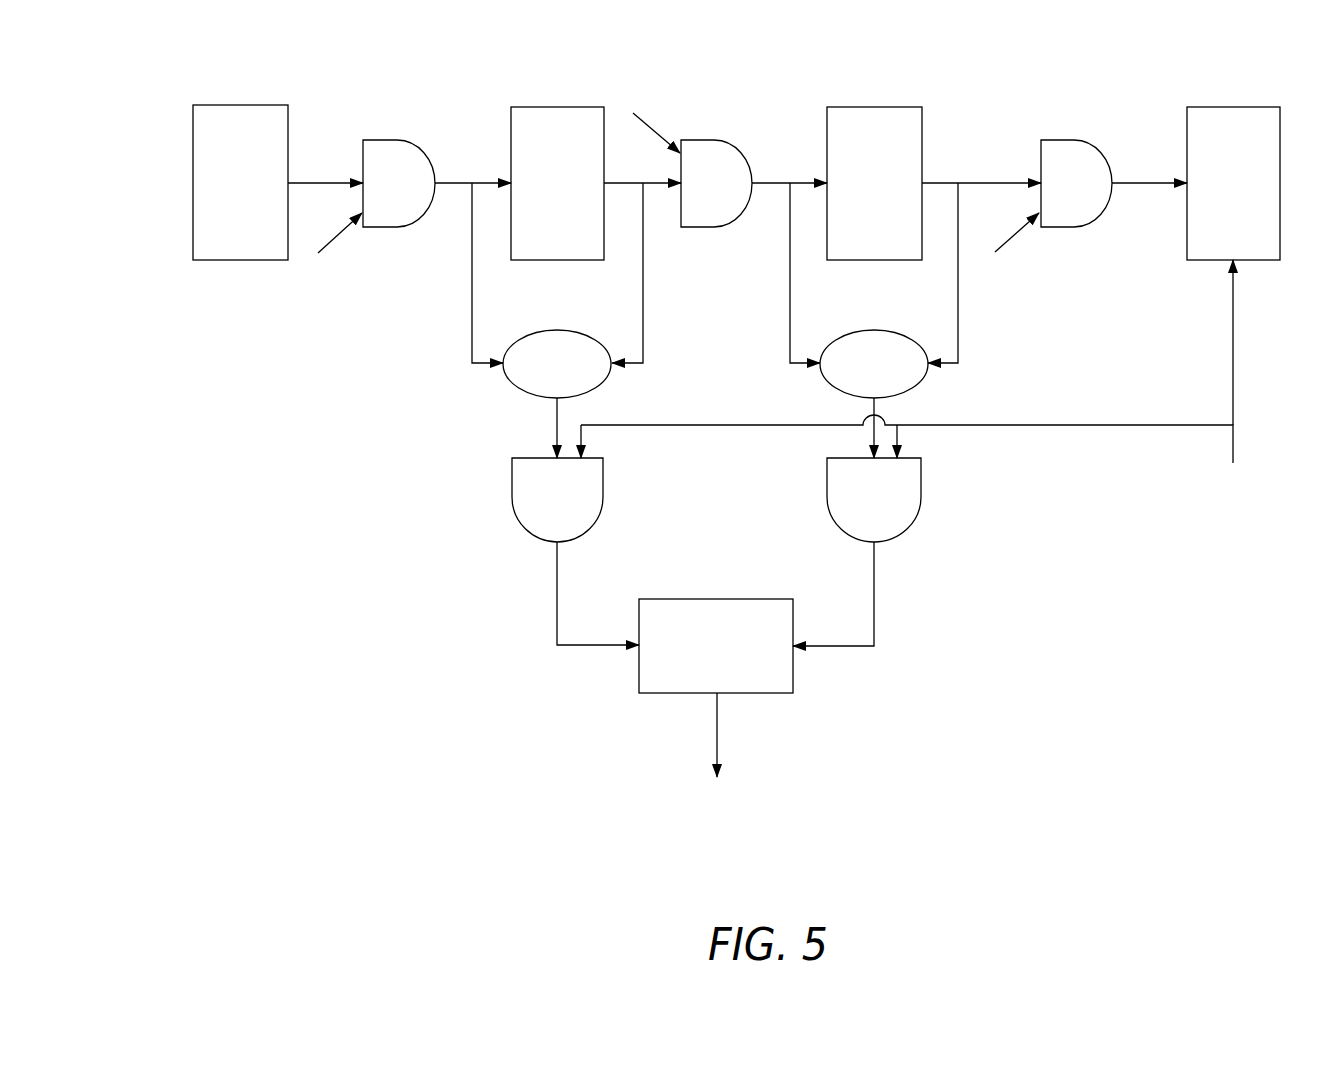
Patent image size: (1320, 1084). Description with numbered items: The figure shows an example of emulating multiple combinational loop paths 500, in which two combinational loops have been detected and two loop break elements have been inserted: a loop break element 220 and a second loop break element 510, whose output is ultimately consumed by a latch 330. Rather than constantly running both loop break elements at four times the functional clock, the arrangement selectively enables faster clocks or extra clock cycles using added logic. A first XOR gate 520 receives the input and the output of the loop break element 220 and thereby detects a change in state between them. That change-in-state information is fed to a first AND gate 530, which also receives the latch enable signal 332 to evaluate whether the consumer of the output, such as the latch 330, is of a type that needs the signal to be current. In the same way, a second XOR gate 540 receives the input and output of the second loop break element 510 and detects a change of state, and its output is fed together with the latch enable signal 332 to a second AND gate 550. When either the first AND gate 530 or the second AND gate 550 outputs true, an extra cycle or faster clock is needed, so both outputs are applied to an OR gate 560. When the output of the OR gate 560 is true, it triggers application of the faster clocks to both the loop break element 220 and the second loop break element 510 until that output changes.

The multiple combinational loop paths 500 is at (170, 79).
The loop break element 220 is at (557, 107).
The second loop break element 510 is at (875, 107).
The latch 330 is at (1235, 107).
The first XOR gate 520 is at (557, 330).
The second XOR gate 540 is at (875, 330).
The latch enable signal 332 is at (1070, 425).
The first AND gate 530 is at (511, 488).
The second AND gate 550 is at (922, 488).
The OR gate 560 is at (717, 599).